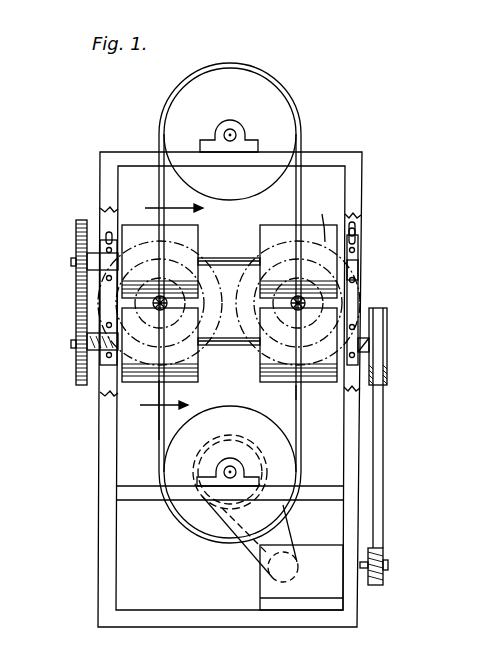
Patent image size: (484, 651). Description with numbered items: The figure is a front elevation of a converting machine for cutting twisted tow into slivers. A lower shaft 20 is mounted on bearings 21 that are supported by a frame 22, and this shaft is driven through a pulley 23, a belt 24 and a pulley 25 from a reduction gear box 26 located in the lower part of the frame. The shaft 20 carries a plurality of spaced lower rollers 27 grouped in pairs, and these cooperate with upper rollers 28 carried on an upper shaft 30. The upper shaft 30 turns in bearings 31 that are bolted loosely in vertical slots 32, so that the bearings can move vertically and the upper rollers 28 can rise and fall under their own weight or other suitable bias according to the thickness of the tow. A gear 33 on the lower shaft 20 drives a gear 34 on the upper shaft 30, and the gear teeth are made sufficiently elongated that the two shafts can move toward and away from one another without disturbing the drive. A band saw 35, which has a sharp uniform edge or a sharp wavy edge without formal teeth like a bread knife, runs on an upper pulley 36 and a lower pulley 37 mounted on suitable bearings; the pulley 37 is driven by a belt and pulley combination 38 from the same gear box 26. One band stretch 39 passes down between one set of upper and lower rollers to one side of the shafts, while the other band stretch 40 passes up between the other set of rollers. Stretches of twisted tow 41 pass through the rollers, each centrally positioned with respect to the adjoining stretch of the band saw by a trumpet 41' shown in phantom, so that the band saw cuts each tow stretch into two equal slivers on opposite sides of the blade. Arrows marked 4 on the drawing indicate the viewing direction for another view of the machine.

The section line direction arrows 4 is at (165, 298).
The shaft 20 is at (388, 342).
The bearings 21 is at (103, 363).
The frame 22 is at (352, 607).
The pulley 23 is at (388, 313).
The belt 24 is at (376, 455).
The pulley 25 is at (385, 553).
The reduction gear box 26 is at (301, 577).
The lower rollers 27 is at (270, 350).
The upper rollers 28 is at (196, 233).
The upper shaft 30 is at (232, 266).
The bearings 31 is at (355, 270).
The vertical slots 32 is at (352, 240).
The gear 33 is at (76, 371).
The gear 34 is at (76, 231).
The band saw 35 is at (292, 413).
The pulley 36 is at (281, 112).
The pulley 37 is at (200, 520).
The belt and pulley combination 38 is at (258, 552).
The band stretch 39 is at (292, 393).
The band stretch 40 is at (160, 414).
The twisted tow 41 is at (229, 303).
The trumpet 41' is at (322, 216).